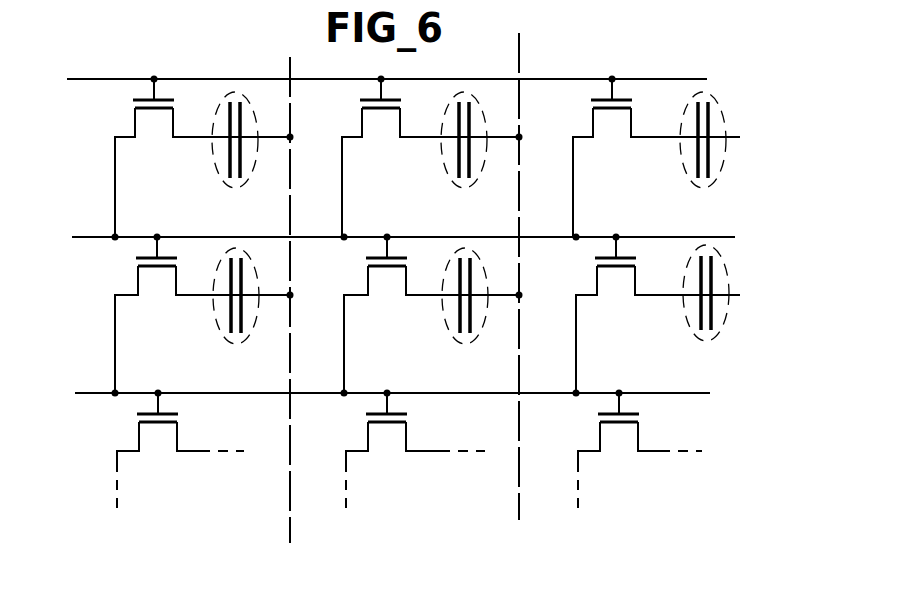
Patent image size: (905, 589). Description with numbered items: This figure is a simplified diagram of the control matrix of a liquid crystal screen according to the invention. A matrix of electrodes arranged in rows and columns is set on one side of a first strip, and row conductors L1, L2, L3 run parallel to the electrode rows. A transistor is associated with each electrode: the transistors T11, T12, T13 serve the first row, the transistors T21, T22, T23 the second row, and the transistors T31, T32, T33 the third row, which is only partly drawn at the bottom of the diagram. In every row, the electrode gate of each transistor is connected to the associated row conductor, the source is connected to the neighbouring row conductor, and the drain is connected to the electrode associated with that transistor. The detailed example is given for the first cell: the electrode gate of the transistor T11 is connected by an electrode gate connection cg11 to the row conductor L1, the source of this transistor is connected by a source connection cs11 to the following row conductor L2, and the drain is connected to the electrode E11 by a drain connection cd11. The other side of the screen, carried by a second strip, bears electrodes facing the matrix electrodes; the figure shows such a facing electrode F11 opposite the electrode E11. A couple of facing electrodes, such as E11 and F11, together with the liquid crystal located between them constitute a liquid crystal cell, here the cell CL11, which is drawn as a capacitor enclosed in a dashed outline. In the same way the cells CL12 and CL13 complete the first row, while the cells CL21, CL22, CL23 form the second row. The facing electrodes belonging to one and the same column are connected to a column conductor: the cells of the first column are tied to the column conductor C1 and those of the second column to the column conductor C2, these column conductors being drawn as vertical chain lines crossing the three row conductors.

The row conductor L1 is at (378, 67).
The row conductor L2 is at (383, 224).
The row conductor L3 is at (380, 380).
The column conductor C1 is at (290, 510).
The column conductor C2 is at (519, 500).
The transistor T11 is at (180, 138).
The transistor T12 is at (378, 109).
The transistor T13 is at (603, 98).
The transistor T21 is at (160, 257).
The transistor T22 is at (392, 257).
The transistor T23 is at (600, 258).
The transistor T31 is at (160, 424).
The transistor T32 is at (388, 423).
The transistor T33 is at (619, 423).
The liquid crystal cell CL11 is at (231, 131).
The liquid crystal cell CL12 is at (441, 160).
The liquid crystal cell CL13 is at (684, 162).
The liquid crystal cell CL21 is at (215, 318).
The liquid crystal cell CL22 is at (452, 320).
The liquid crystal cell CL23 is at (683, 314).
The electrode gate connection cg11 is at (133, 100).
The source connection cs11 is at (134, 128).
The drain connection cd11 is at (162, 136).
The electrode E11 is at (226, 116).
The electrode F11 is at (242, 178).